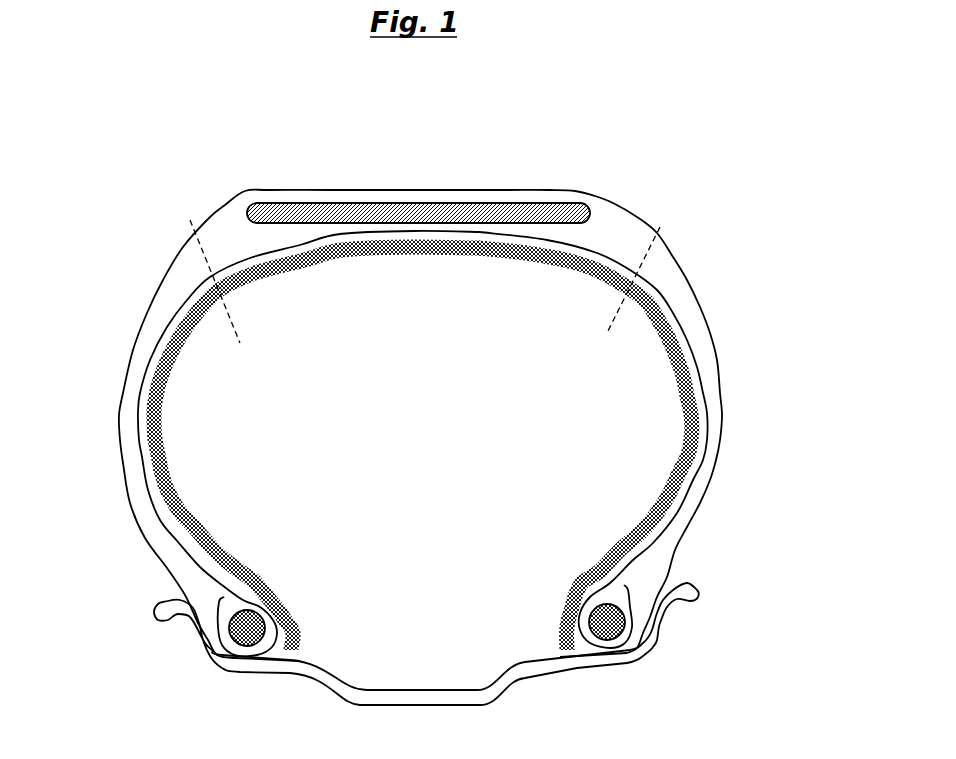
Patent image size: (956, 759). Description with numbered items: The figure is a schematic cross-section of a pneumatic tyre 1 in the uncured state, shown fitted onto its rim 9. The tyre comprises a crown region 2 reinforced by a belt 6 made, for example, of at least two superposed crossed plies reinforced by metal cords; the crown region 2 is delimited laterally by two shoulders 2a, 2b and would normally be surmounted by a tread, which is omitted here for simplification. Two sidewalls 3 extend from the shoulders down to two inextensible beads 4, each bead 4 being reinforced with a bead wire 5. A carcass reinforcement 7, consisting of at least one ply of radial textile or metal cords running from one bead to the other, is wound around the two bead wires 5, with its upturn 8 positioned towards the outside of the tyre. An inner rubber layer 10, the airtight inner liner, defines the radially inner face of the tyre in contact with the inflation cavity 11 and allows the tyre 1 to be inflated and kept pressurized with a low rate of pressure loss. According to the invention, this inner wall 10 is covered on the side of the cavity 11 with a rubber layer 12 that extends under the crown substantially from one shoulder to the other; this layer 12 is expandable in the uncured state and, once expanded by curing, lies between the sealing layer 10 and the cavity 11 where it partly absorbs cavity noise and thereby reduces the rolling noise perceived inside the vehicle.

The pneumatic tyre 1 is at (443, 433).
The crown region 2 is at (567, 198).
The shoulder 2a is at (183, 203).
The shoulder 2b is at (670, 212).
The sidewall 3 is at (128, 414).
The bead 4 is at (264, 657).
The bead wire 5 is at (268, 628).
The belt 6 is at (423, 203).
The carcass reinforcement 7 is at (155, 317).
The upturn 8 is at (180, 572).
The rim 9 is at (200, 640).
The inner rubber layer 10 is at (680, 358).
The inflation cavity 11 is at (262, 450).
The rubber layer 12 is at (557, 267).